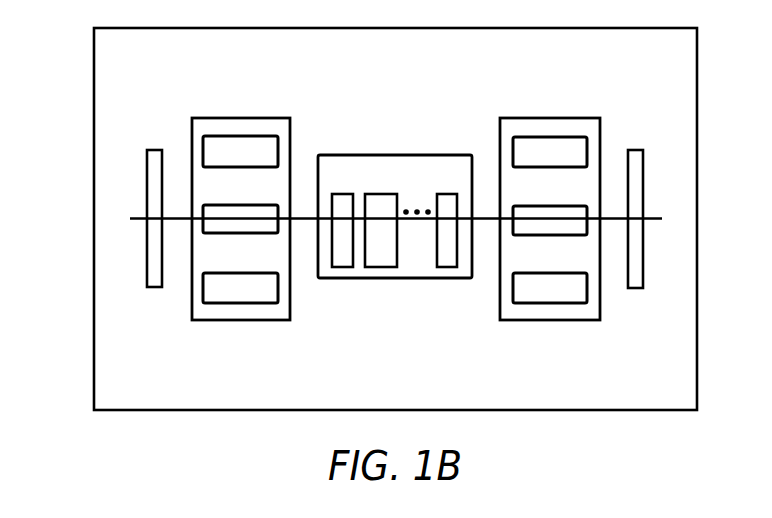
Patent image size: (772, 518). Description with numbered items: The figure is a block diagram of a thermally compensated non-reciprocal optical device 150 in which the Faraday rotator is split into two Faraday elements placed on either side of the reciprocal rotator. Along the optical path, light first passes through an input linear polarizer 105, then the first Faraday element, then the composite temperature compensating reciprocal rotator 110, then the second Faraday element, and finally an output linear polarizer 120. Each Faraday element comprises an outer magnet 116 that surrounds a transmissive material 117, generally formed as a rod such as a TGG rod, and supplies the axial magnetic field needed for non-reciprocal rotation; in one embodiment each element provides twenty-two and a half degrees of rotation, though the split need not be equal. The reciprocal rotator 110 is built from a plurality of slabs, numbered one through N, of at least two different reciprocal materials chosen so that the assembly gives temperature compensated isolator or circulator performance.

The input linear polarizer 105 is at (147, 185).
The composite temperature compensating reciprocal rotator 110 is at (393, 278).
The outer magnet 116 is at (258, 164).
The transmissive material 117 is at (258, 230).
The output linear polarizer 120 is at (643, 183).
The thermally compensated non-reciprocal optical device 150 is at (682, 468).